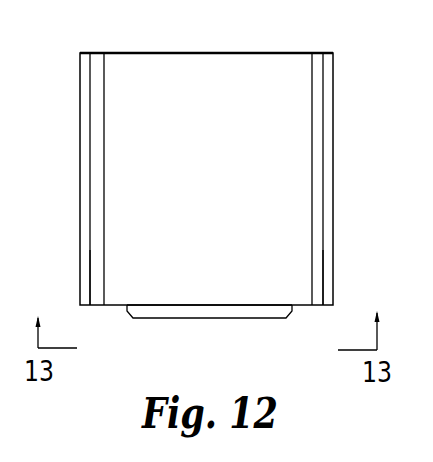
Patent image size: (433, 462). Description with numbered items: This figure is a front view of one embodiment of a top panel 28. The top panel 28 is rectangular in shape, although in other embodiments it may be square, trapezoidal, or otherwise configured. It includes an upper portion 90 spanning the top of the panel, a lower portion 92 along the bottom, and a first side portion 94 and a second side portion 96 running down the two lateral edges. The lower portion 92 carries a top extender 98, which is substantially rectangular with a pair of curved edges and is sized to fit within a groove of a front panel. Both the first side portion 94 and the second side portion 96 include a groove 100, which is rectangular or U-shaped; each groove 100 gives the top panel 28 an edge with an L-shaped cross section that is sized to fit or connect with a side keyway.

The top panel 28 is at (336, 115).
The upper portion 90 is at (168, 68).
The second side portion 96 is at (80, 160).
The first side portion 94 is at (336, 172).
The groove 100 is at (97, 297).
The top extender 98 is at (173, 312).
The lower portion 92 is at (166, 280).